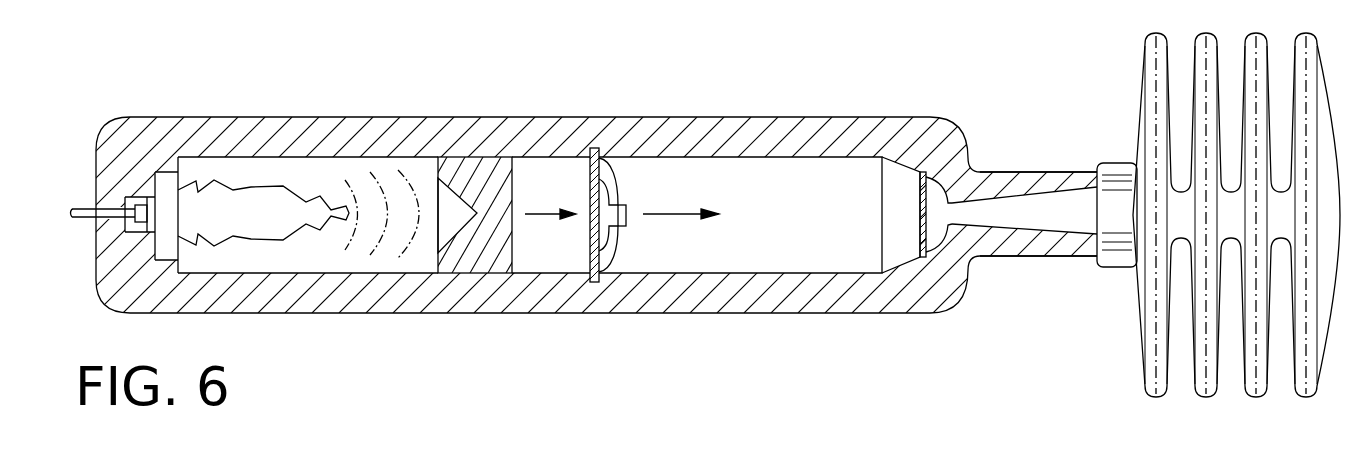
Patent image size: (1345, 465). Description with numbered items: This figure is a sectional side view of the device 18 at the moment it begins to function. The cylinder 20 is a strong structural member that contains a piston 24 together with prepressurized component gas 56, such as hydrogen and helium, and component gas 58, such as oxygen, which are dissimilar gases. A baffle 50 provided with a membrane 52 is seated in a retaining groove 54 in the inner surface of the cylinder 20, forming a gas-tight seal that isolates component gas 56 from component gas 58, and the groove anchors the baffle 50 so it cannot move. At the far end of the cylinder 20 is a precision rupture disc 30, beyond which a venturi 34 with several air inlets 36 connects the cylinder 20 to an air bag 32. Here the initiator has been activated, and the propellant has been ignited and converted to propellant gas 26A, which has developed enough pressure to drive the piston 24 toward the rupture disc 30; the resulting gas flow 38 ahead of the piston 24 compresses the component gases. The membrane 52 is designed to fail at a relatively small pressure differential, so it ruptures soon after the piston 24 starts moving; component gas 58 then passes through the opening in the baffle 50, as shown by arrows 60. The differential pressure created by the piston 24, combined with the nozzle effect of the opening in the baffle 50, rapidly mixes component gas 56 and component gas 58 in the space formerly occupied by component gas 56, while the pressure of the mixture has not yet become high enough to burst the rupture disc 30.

The device 18 is at (428, 58).
The cylinder 20 is at (281, 127).
The piston 24 is at (473, 167).
The propellant gas 26A is at (250, 222).
The precision rupture disc 30 is at (920, 203).
The air bag 32 is at (1144, 50).
The venturi 34 is at (1079, 208).
The air inlets 36 is at (1013, 250).
The gas flow 38 is at (526, 218).
The baffle 50 is at (600, 252).
The membrane 52 is at (627, 212).
The retaining groove 54 is at (587, 165).
The component gas 56 is at (727, 168).
The component gas 58 is at (536, 262).
The arrows 60 is at (671, 217).